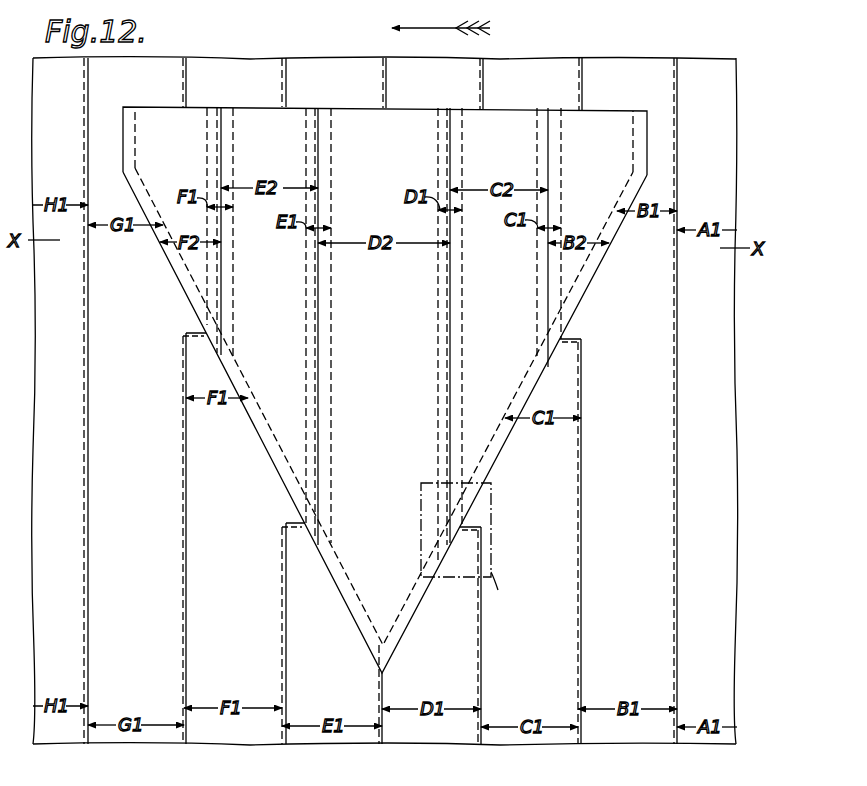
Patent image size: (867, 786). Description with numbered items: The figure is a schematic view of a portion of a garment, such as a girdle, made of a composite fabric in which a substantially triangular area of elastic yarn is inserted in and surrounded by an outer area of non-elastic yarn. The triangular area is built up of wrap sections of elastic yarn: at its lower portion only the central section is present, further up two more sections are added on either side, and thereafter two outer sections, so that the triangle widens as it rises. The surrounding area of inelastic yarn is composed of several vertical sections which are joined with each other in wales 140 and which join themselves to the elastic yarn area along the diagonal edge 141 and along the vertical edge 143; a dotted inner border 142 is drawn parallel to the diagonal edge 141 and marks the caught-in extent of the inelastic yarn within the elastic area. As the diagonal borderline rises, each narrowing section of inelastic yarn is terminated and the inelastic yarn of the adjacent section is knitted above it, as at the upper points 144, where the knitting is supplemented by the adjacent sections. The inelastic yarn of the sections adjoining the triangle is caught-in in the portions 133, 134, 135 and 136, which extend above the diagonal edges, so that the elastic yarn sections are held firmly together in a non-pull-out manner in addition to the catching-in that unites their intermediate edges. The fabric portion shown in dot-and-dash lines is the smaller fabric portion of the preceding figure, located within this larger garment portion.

The caught-in inelastic yarn portion 133 is at (561, 107).
The caught-in inelastic yarn portion 134 is at (462, 107).
The caught-in inelastic yarn portion 135 is at (331, 106).
The caught-in inelastic yarn portion 136 is at (221, 106).
The wales 140 is at (385, 58).
The diagonal edge 141 is at (178, 280).
The inner converging wall 142 is at (228, 351).
The vertical edge 143 is at (126, 112).
The upper points 144 is at (196, 331).